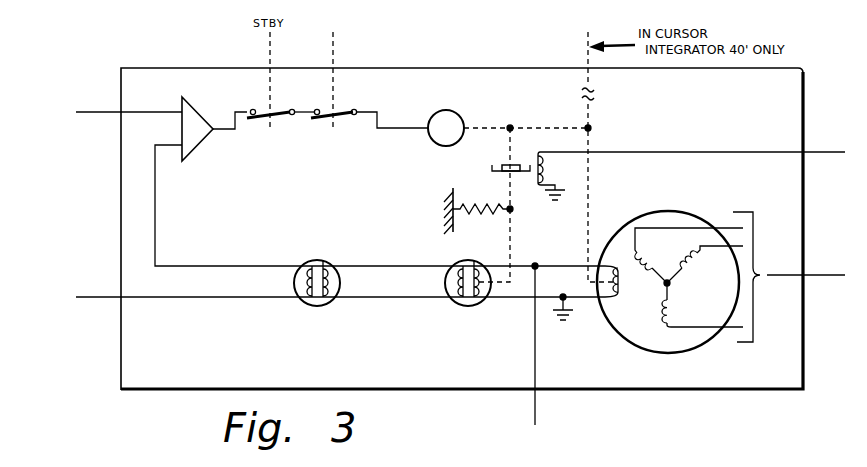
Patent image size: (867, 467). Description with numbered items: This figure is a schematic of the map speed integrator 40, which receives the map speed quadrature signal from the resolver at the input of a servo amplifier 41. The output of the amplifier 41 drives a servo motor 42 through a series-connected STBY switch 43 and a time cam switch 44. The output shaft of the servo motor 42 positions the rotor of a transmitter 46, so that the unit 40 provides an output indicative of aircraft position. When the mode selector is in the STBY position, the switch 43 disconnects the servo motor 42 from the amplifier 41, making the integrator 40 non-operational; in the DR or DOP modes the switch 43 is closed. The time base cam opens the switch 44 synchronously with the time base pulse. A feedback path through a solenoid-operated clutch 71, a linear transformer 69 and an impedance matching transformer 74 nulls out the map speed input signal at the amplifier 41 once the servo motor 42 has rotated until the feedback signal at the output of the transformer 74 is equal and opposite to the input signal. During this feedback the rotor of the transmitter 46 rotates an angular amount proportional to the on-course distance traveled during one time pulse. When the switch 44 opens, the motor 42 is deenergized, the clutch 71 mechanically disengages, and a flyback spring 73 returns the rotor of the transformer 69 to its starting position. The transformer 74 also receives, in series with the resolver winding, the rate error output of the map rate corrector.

The map speed integrator 40 is at (141, 68).
The servo amplifier 41 is at (192, 108).
The servo motor 42 is at (452, 111).
The STBY switch 43 is at (272, 118).
The time cam switch 44 is at (336, 118).
The transmitter 46 is at (661, 210).
The linear transformer 69 is at (459, 305).
The solenoid-operated clutch 71 is at (502, 160).
The flyback spring 73 is at (497, 206).
The impedance matching transformer 74 is at (304, 304).